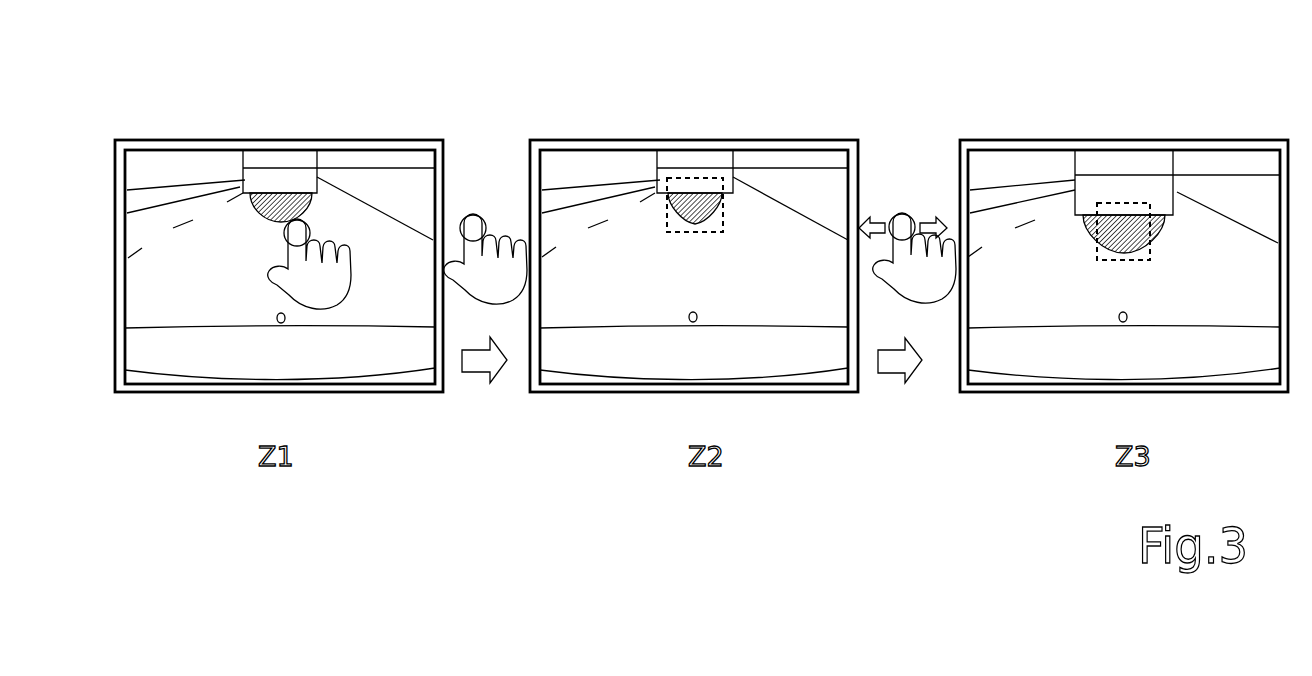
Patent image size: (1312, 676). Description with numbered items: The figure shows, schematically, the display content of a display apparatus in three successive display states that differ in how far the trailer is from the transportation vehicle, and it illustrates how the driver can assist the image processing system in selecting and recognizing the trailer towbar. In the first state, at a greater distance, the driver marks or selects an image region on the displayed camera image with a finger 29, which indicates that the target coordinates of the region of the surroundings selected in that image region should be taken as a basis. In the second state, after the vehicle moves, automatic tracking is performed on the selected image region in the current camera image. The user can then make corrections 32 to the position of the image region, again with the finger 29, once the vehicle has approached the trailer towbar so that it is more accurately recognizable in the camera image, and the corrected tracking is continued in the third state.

The finger 29 is at (471, 215).
The corrections 32 is at (880, 213).